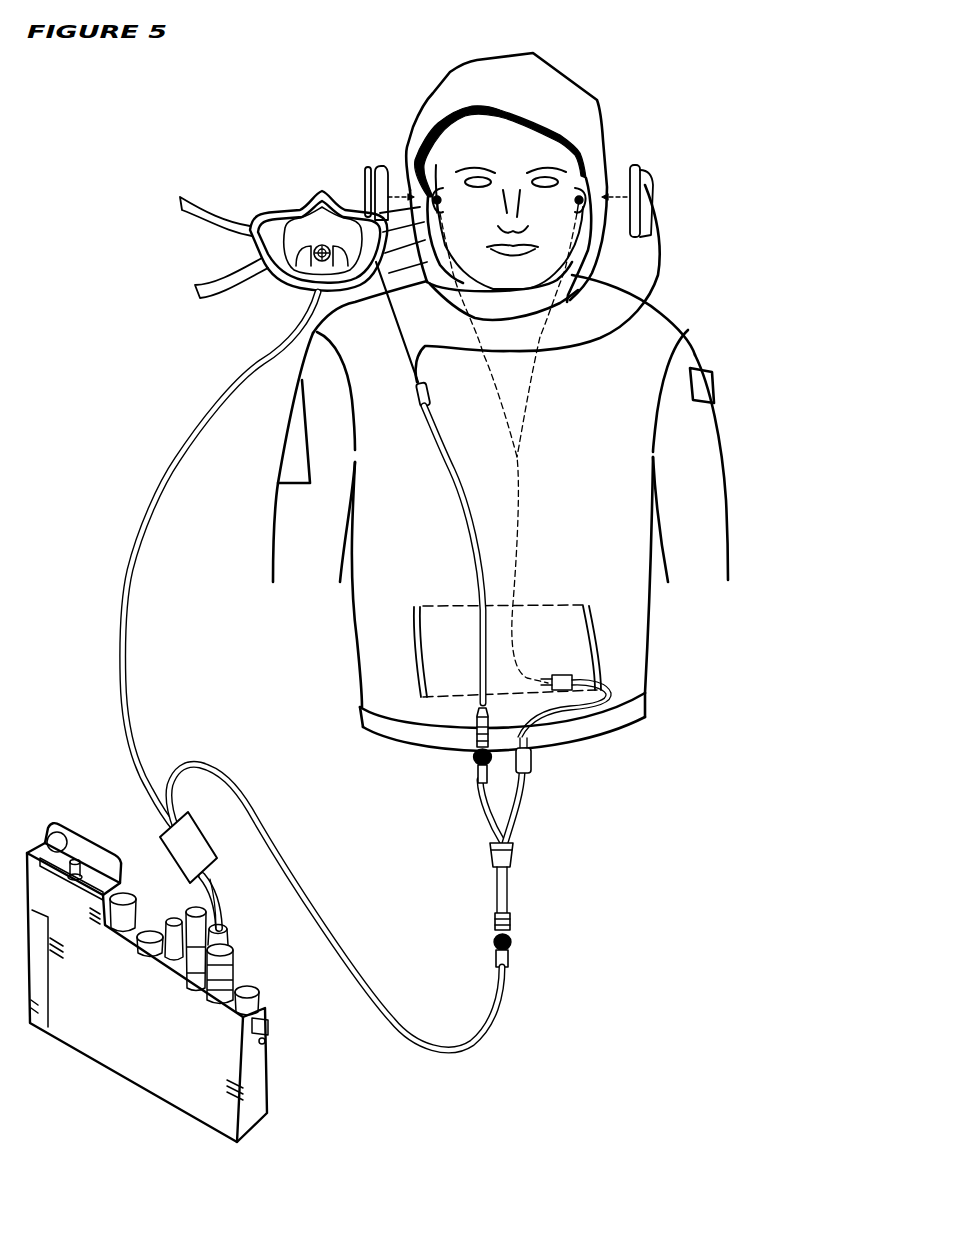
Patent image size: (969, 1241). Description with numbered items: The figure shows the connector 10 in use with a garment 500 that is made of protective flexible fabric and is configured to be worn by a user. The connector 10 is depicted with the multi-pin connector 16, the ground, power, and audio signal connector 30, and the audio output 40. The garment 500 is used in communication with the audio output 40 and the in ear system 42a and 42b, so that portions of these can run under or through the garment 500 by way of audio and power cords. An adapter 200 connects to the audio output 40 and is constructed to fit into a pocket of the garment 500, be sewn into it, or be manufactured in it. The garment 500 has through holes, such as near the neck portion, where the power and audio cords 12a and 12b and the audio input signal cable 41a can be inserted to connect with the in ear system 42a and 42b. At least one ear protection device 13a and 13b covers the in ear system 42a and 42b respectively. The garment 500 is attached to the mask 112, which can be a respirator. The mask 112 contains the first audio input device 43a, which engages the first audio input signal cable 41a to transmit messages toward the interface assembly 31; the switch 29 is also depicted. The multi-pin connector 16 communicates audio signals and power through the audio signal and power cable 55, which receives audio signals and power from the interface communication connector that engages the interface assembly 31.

The garment 500 is at (601, 153).
The ear protection device 13a is at (382, 165).
The ear protection device 13b is at (640, 165).
The in ear system 42a is at (437, 198).
The in ear system 42b is at (581, 205).
The power and audio cord 12a is at (405, 355).
The power and audio cord 12b is at (657, 257).
The first audio input device 43a is at (320, 248).
The mask 112 is at (270, 280).
The first audio input signal cable 41a is at (236, 389).
The adapter 200 is at (562, 674).
The ground, power, and audio signal connector 30 is at (473, 757).
The audio output 40 is at (532, 757).
The connector 10 is at (470, 867).
The multi-pin connector 16 is at (513, 927).
The audio signal and power cable 55 is at (458, 1045).
The switch 29 is at (193, 840).
The interface assembly 31 is at (117, 1057).